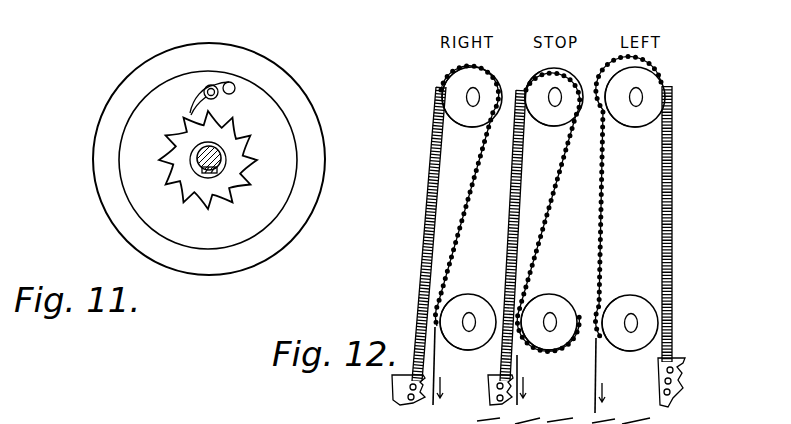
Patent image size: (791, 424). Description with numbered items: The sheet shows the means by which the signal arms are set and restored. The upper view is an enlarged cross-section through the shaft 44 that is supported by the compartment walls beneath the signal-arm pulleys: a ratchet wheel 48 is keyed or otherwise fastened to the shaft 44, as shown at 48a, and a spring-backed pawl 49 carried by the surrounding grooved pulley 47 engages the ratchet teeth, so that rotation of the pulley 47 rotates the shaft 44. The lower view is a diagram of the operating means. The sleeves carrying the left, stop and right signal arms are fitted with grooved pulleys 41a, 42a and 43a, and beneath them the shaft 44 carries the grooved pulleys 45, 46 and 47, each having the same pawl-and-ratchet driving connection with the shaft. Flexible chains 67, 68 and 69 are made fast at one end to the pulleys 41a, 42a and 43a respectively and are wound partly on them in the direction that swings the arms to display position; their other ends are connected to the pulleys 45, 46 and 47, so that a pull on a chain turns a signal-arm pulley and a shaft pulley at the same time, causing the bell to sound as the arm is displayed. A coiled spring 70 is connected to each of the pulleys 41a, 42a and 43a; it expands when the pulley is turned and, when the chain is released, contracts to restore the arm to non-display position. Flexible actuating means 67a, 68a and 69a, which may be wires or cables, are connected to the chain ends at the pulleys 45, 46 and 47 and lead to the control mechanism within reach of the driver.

In FIG. 11, the shaft 44 is at (195, 163).
In FIG. 11, the grooved pulley 47 is at (211, 264).
In FIG. 12, the grooved pulley 47 is at (463, 295).
In FIG. 11, the ratchet wheel 48 is at (243, 132).
In FIG. 11, the key fastening 48a is at (204, 173).
In FIG. 11, the pawl 49 is at (195, 110).
In FIG. 12, the pulley of sleeve 41a is at (642, 83).
In FIG. 12, the pulley of sleeve 42a is at (527, 77).
In FIG. 12, the pulley of sleeve 43a is at (462, 75).
In FIG. 12, the grooved pulley 45 is at (623, 296).
In FIG. 12, the grooved pulley 46 is at (548, 295).
In FIG. 12, the chain 67 is at (598, 214).
In FIG. 12, the flexible actuating means 67a is at (596, 372).
In FIG. 12, the chain 68 is at (540, 233).
In FIG. 12, the flexible actuating means 68a is at (517, 372).
In FIG. 12, the chain 69 is at (455, 232).
In FIG. 12, the flexible actuating means 69a is at (433, 372).
In FIG. 12, the coiled spring 70 is at (424, 204).